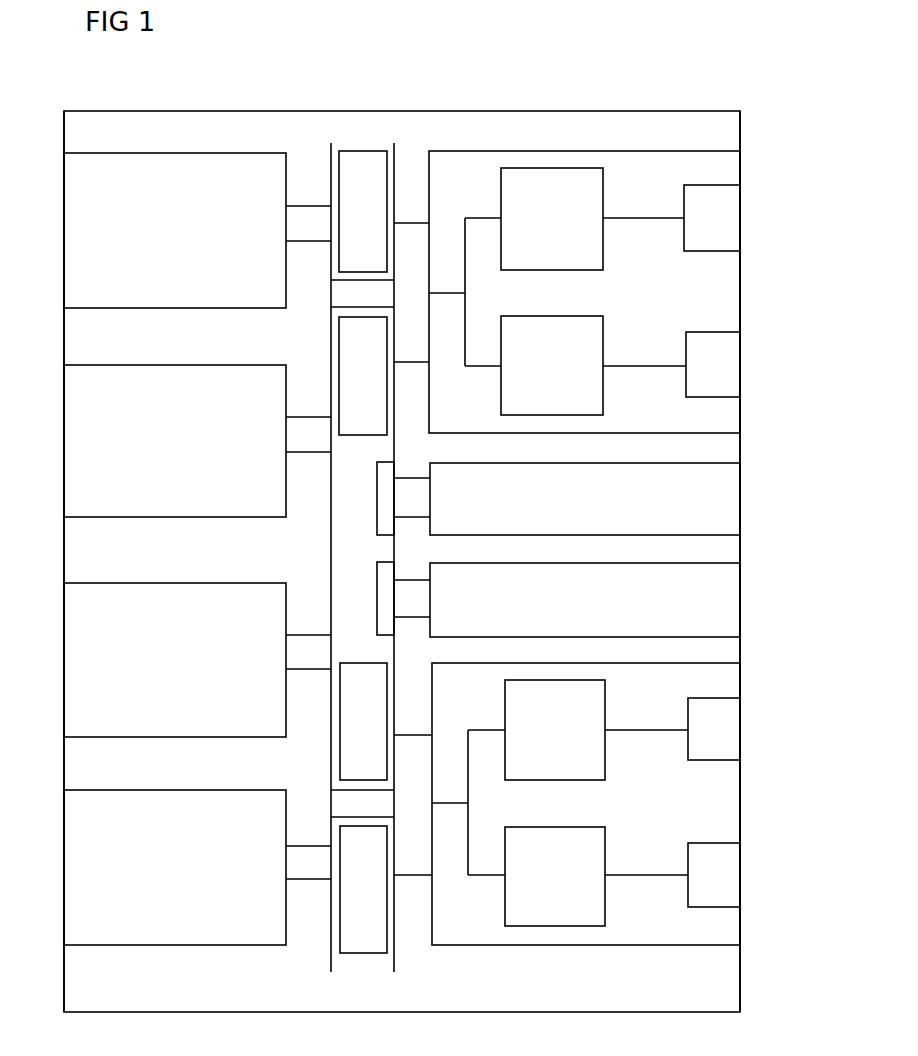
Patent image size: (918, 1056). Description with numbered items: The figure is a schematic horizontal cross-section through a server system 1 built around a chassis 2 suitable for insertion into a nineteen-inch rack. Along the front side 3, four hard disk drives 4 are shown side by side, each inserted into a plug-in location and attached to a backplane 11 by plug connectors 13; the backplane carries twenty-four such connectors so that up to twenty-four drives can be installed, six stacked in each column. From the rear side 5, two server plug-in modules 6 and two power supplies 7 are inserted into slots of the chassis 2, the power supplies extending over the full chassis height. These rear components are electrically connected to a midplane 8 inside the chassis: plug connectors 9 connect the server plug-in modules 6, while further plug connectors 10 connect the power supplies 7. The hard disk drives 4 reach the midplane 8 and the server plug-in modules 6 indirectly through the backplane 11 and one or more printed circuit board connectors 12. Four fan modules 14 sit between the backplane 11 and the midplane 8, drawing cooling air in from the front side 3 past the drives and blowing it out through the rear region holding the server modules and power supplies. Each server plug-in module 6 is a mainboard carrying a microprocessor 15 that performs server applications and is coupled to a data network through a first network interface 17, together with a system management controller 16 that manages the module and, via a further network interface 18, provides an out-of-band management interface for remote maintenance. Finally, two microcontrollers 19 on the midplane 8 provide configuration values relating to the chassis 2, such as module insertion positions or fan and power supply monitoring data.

The server system 1 is at (671, 42).
The chassis 2 is at (347, 110).
The front side 3 is at (63, 125).
The hard disk drives 4 is at (181, 879).
The rear side 5 is at (743, 127).
The server plug-in modules 6 is at (594, 814).
The power supplies 7 is at (592, 610).
The midplane 8 is at (395, 140).
The plug connectors 9 is at (421, 816).
The further plug connectors 10 is at (425, 610).
The backplane 11 is at (330, 140).
The printed circuit board connectors 12 is at (376, 814).
The plug connectors 13 is at (321, 874).
The fan modules 14 is at (376, 901).
The microprocessor 15 is at (568, 886).
The system management controller 16 is at (568, 741).
The first network interface 17 is at (727, 886).
The further network interface 18 is at (727, 741).
The microcontrollers 19 is at (377, 495).